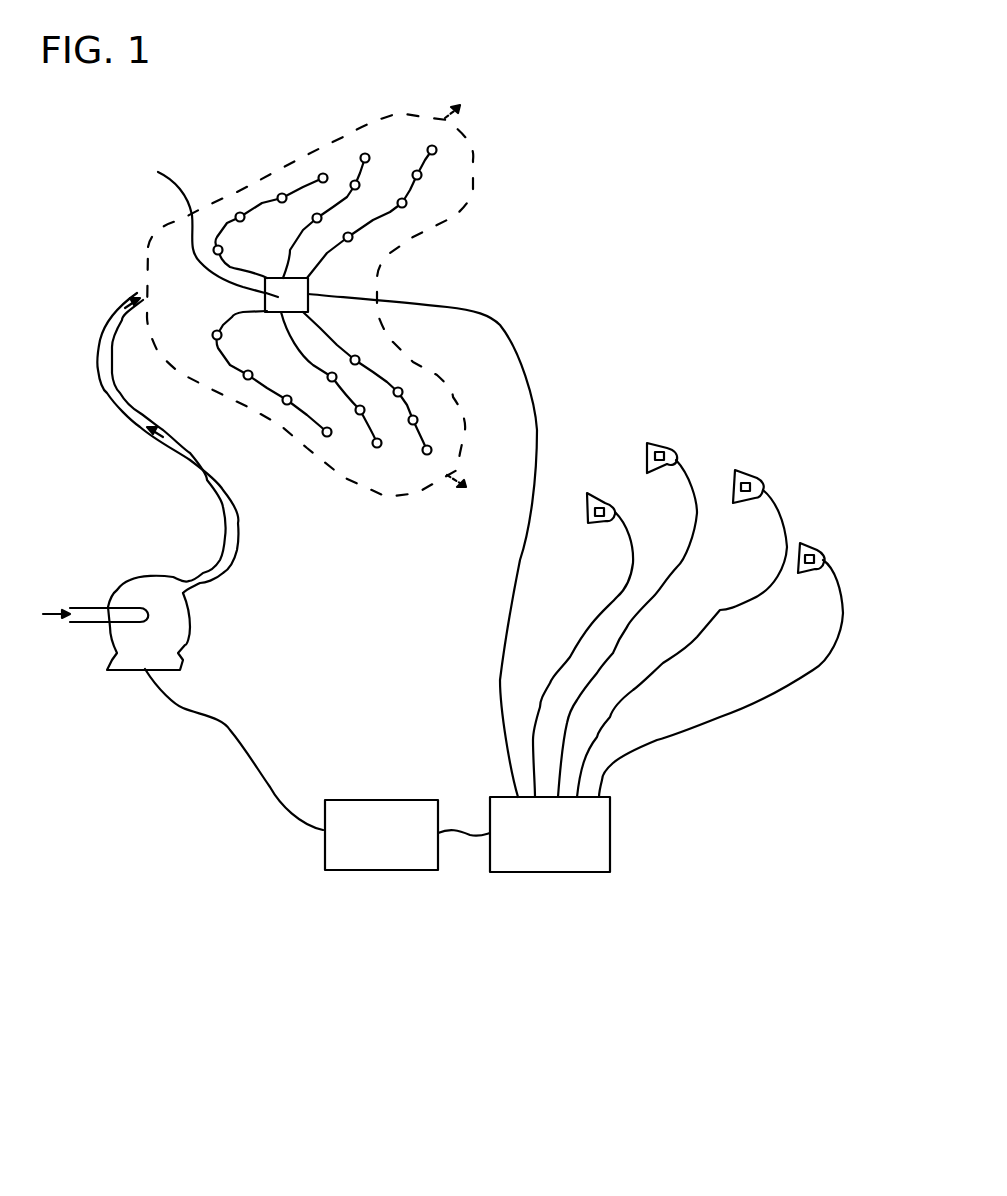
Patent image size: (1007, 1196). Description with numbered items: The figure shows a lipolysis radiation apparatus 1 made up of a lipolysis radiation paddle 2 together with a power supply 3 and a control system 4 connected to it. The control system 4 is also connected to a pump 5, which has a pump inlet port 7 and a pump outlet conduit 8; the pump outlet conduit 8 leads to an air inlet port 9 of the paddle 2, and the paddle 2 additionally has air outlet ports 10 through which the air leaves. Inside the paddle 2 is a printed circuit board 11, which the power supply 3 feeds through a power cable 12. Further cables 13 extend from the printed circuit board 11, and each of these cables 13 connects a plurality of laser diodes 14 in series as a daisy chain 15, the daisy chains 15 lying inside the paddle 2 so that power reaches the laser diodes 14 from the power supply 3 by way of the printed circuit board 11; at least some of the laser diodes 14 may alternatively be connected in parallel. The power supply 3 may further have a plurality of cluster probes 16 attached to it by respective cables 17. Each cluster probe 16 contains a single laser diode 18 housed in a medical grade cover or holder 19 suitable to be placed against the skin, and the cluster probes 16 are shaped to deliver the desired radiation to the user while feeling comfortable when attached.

The lipolysis radiation apparatus 1 is at (737, 167).
The lipolysis radiation paddle 2 is at (278, 176).
The power supply 3 is at (557, 872).
The control system 4 is at (377, 870).
The pump 5 is at (108, 626).
The pump inlet port 7 is at (92, 607).
The pump outlet conduit 8 is at (193, 468).
The air inlet port 9 is at (144, 292).
The air outlet ports 10 is at (463, 124).
The printed circuit board 11 is at (218, 230).
The power cable 12 is at (510, 325).
The cables 13 is at (387, 223).
The laser diodes 14 is at (423, 177).
The daisy chain 15 is at (405, 183).
The cluster probes 16 is at (602, 494).
The cables 17 is at (792, 687).
The laser diode 18 is at (673, 455).
The holder 19 is at (646, 458).